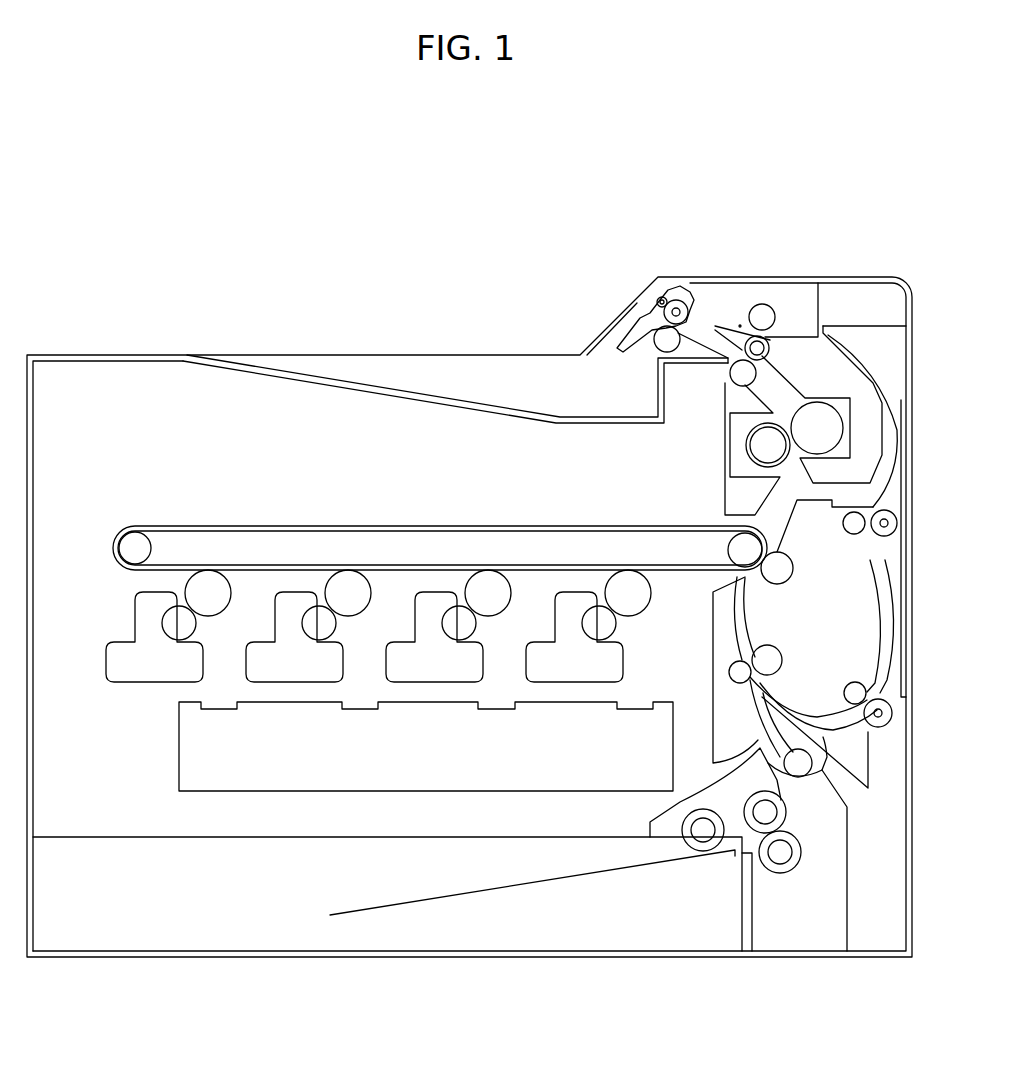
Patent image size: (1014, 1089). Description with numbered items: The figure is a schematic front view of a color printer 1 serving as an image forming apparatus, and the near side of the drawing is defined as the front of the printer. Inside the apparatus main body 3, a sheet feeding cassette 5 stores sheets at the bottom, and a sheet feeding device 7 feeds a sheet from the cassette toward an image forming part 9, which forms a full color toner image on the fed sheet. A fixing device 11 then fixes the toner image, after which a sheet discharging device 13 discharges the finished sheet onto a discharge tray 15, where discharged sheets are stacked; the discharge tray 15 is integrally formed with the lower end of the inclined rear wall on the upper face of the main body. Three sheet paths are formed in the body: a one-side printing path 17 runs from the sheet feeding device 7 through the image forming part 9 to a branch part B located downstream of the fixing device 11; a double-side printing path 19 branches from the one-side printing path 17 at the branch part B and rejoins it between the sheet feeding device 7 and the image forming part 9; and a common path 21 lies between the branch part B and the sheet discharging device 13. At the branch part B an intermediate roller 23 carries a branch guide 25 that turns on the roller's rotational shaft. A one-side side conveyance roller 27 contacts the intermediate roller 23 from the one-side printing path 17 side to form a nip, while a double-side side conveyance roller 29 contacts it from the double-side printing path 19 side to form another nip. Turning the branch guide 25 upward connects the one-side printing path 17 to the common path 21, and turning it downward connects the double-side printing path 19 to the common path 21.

The color printer 1 is at (375, 232).
The apparatus main body 3 is at (770, 272).
The sheet feeding cassette 5 is at (97, 835).
The sheet feeding device 7 is at (640, 825).
The image forming part 9 is at (562, 518).
The fixing device 11 is at (745, 450).
The sheet discharging device 13 is at (662, 295).
The discharge tray 15 is at (305, 375).
The one-side printing path 17 is at (738, 630).
The double-side printing path 19 is at (890, 432).
The common path 21 is at (700, 338).
The intermediate roller 23 is at (780, 343).
The branch guide 25 is at (737, 333).
The one-side side conveyance roller 27 is at (733, 374).
The double-side side conveyance roller 29 is at (772, 308).
The branch part B is at (741, 322).